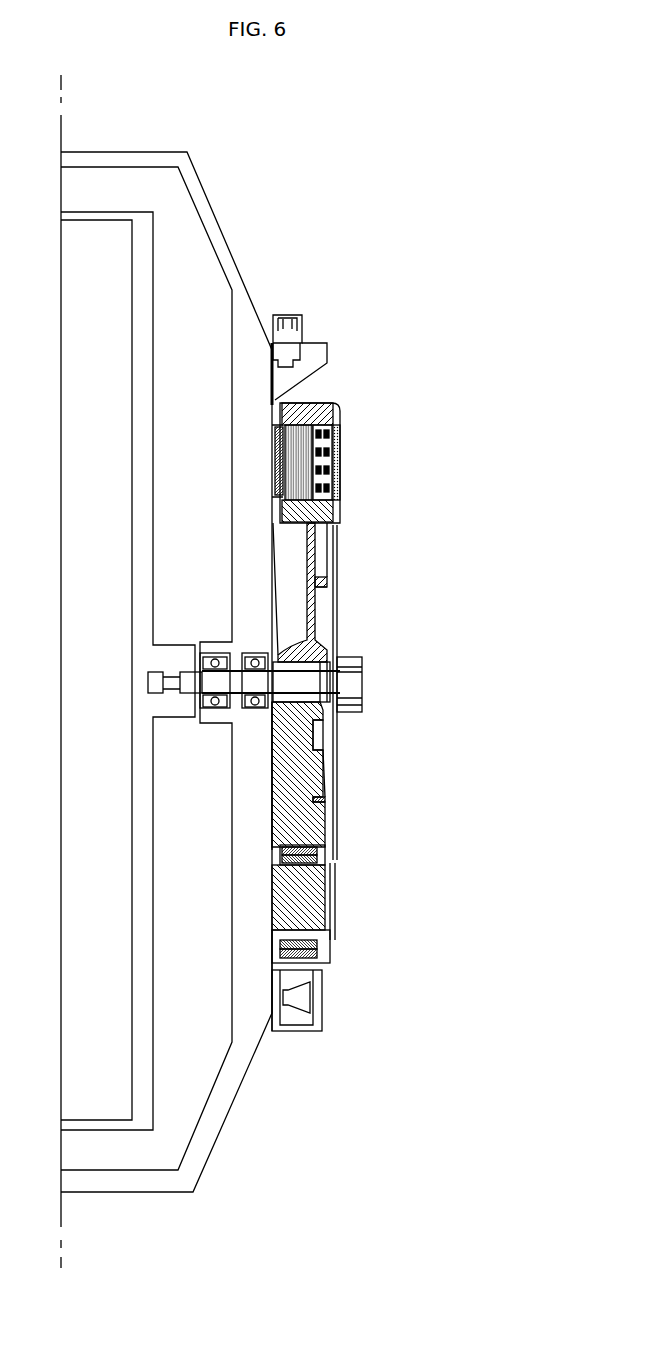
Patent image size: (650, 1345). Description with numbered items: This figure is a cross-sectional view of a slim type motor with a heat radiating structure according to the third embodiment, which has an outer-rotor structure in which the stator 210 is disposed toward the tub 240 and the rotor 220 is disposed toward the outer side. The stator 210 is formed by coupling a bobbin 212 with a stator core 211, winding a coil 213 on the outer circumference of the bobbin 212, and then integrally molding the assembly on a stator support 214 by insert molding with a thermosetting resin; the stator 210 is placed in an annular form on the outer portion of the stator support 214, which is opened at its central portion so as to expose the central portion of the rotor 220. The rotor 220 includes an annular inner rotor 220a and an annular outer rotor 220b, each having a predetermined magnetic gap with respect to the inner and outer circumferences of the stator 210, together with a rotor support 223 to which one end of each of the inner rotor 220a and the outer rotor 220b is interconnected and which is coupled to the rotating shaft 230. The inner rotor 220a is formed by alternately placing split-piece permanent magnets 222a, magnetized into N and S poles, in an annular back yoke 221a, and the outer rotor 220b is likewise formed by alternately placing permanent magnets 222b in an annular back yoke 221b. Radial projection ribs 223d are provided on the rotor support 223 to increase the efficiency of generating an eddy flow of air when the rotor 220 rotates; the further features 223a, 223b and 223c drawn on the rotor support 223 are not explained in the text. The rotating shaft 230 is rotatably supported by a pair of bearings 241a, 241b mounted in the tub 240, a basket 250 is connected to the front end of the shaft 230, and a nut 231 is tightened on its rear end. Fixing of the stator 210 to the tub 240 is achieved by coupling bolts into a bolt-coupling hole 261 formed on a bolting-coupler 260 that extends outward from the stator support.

The stator 210 is at (359, 463).
The stator core 211 is at (305, 445).
The bobbin 212 is at (325, 490).
The coil 213 is at (337, 469).
The stator support 214 is at (333, 427).
The rotor 220 is at (403, 900).
The annular inner rotor 220a is at (380, 855).
The annular outer rotor 220b is at (376, 946).
The annular back yoke 221a is at (327, 847).
The annular back yoke 221b is at (328, 953).
The permanent magnets 222a is at (320, 857).
The permanent magnets 222b is at (328, 942).
The rotor support 223 is at (310, 543).
The rotor frame protrusion 223a is at (327, 582).
The rotor frame recess 223b is at (317, 750).
The rotor frame step 223c is at (323, 799).
The radial projection ribs 223d is at (272, 797).
The rotating shaft 230 is at (332, 677).
The nut 231 is at (362, 683).
The tub 240 is at (213, 213).
The bearing 241a is at (255, 653).
The bearing 241b is at (215, 653).
The basket 250 is at (153, 375).
The bolting-coupler 260 is at (303, 1030).
The bolt-coupling hole 261 is at (308, 995).